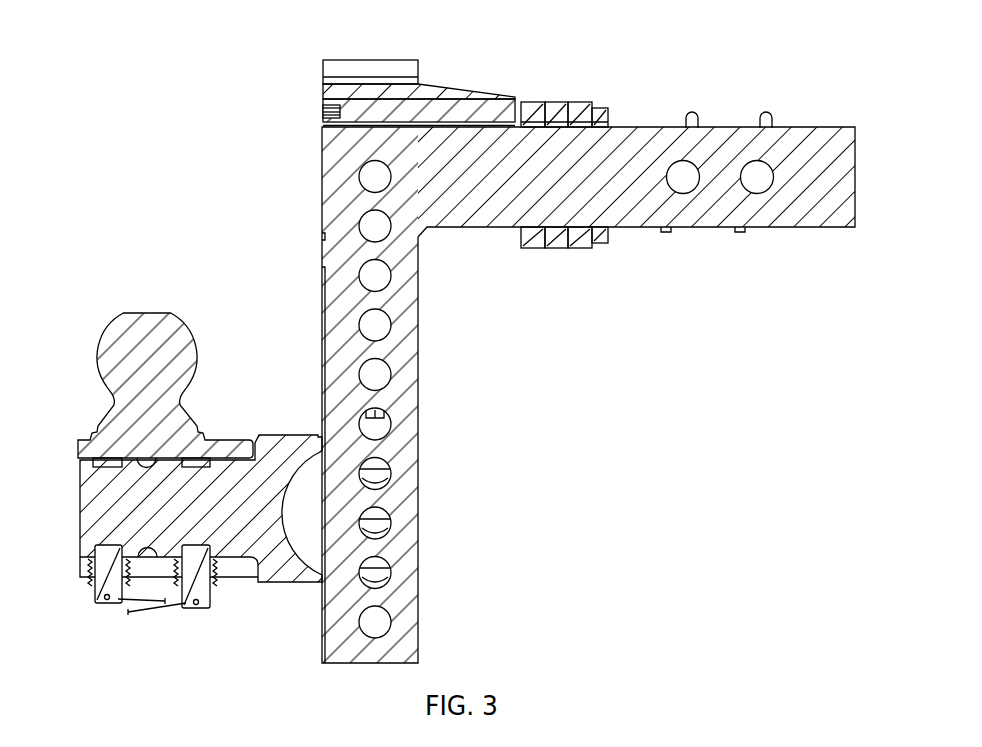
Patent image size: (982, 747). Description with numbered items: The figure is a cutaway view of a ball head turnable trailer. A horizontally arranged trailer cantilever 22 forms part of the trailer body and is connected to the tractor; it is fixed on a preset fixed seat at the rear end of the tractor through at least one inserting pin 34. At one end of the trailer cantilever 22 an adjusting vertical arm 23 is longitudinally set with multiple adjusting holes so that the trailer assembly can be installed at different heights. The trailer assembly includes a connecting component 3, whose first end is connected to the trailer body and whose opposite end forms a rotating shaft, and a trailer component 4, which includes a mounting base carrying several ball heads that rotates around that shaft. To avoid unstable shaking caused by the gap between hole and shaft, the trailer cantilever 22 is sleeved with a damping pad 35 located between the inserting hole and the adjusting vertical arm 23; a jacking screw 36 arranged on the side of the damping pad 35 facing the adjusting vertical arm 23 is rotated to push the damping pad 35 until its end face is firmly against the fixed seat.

The connecting component 3 is at (294, 443).
The trailer component 4 is at (235, 448).
The trailer cantilever 22 is at (623, 132).
The adjusting vertical arm 23 is at (415, 347).
The inserting pin 34 is at (685, 178).
The damping pad 35 is at (548, 107).
The jacking screw 36 is at (465, 107).